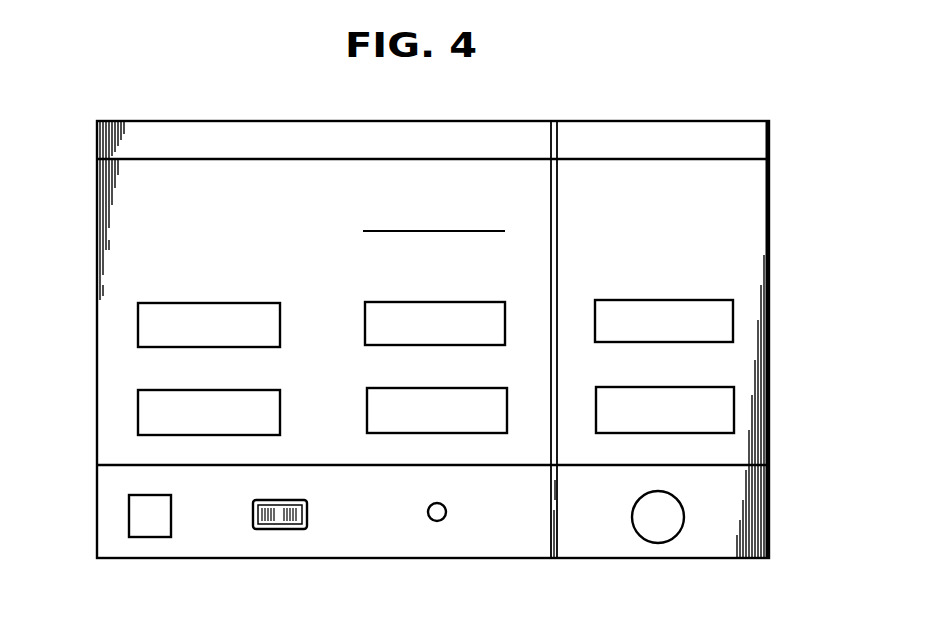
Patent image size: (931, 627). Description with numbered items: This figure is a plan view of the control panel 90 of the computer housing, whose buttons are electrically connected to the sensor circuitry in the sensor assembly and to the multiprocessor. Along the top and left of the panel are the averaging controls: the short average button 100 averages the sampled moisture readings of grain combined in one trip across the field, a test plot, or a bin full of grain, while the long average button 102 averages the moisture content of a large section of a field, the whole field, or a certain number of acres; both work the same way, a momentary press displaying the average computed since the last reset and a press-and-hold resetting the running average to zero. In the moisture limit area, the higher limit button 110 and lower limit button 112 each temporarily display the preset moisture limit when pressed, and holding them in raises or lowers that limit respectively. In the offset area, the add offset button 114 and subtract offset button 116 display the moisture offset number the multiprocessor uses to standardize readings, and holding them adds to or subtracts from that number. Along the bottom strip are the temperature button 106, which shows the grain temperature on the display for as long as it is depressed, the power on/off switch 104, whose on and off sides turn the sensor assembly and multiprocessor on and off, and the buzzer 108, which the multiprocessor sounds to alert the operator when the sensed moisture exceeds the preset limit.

The control panel 90 is at (703, 178).
The short average button 100 is at (138, 407).
The long average button 102 is at (138, 322).
The power on/off switch 104 is at (307, 508).
The temperature button 106 is at (162, 537).
The buzzer 108 is at (680, 532).
The higher limit button 110 is at (373, 302).
The lower limit button 112 is at (468, 433).
The add offset button 114 is at (733, 312).
The subtract offset button 116 is at (734, 405).